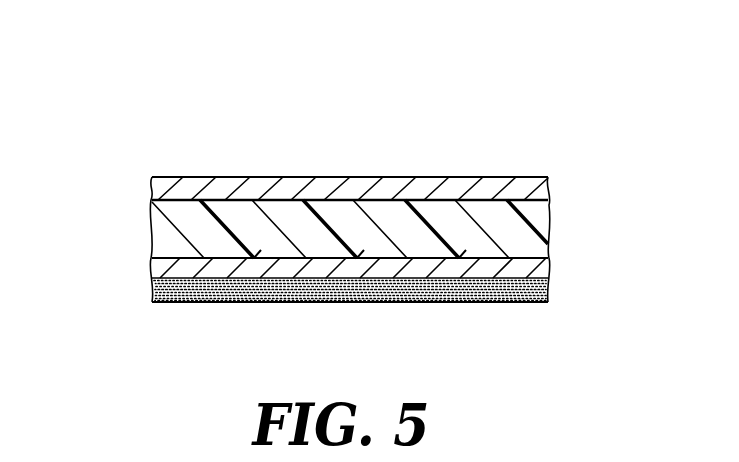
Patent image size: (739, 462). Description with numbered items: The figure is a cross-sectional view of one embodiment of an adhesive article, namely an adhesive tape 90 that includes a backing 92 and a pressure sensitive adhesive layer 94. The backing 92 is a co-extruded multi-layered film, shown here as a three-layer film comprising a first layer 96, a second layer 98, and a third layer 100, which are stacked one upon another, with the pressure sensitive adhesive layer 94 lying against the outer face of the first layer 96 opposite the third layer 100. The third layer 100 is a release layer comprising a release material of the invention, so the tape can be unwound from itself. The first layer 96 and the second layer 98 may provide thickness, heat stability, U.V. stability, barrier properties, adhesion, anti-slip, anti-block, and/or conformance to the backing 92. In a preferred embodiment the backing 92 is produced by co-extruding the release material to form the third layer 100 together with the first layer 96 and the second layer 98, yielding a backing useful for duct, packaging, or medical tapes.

The adhesive tape 90 is at (346, 218).
The backing 92 is at (346, 199).
The pressure sensitive adhesive layer 94 is at (485, 292).
The first layer 96 is at (168, 268).
The second layer 98 is at (170, 238).
The third layer 100 is at (238, 183).